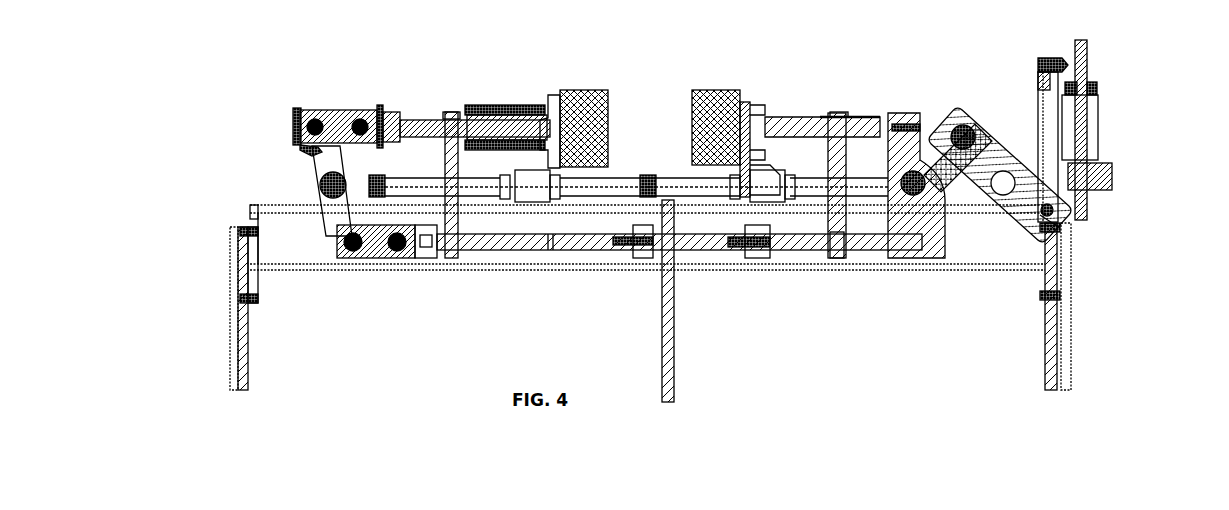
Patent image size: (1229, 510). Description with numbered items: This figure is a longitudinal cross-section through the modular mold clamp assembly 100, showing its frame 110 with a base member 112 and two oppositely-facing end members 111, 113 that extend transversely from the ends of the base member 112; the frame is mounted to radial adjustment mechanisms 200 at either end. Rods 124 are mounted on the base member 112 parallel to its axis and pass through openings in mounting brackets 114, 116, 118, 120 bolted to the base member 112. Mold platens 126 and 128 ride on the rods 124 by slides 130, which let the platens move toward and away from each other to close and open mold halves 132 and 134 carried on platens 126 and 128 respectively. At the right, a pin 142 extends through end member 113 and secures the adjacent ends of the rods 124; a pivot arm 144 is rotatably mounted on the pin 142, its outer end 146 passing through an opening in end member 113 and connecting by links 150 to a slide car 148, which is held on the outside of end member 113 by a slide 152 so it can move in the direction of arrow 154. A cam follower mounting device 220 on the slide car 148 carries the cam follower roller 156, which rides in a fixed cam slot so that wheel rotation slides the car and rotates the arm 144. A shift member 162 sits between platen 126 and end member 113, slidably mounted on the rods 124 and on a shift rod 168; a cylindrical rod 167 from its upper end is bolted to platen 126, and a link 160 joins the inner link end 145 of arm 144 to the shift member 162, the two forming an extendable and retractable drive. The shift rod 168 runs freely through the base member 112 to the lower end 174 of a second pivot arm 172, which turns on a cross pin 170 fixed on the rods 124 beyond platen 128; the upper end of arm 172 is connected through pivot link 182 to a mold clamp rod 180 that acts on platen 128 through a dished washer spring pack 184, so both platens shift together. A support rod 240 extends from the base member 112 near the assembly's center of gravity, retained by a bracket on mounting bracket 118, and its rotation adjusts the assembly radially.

The modular mold clamp assembly 100 is at (292, 87).
The frame 110 is at (205, 160).
The end member 111 is at (250, 252).
The base member 112 is at (312, 248).
The end member 113 is at (1052, 258).
The mounting bracket 114 is at (398, 258).
The mounting bracket 116 is at (460, 245).
The mounting bracket 118 is at (632, 250).
The mounting bracket 120 is at (822, 248).
The rods 124 is at (500, 250).
The mold platen 126 is at (746, 95).
The mold platen 128 is at (550, 92).
The slides 130 is at (565, 200).
The mold half 132 is at (716, 92).
The mold half 134 is at (580, 90).
The pin 142 is at (1010, 200).
The pivot arm 144 is at (980, 250).
The inner link end 145 is at (970, 110).
The outer end 146 is at (1057, 220).
The slide car 148 is at (1088, 150).
The links 150 is at (1062, 212).
The slide 152 is at (1040, 62).
The arrow 154 is at (1042, 40).
The cam follower roller 156 is at (1115, 172).
The link 160 is at (918, 150).
The shift member 162 is at (855, 150).
The cylindrical rod 167 is at (805, 118).
The shift rod 168 is at (553, 250).
The cross pin 170 is at (320, 184).
The pivot arm 172 is at (300, 147).
The lower end 174 is at (353, 256).
The mold clamp rod 180 is at (425, 118).
The pivot link 182 is at (325, 108).
The dished washer spring pack 184 is at (495, 105).
The radial adjustment mechanisms 200 is at (232, 325).
The cam follower mounting device 220 is at (1095, 108).
The support rod 240 is at (674, 340).